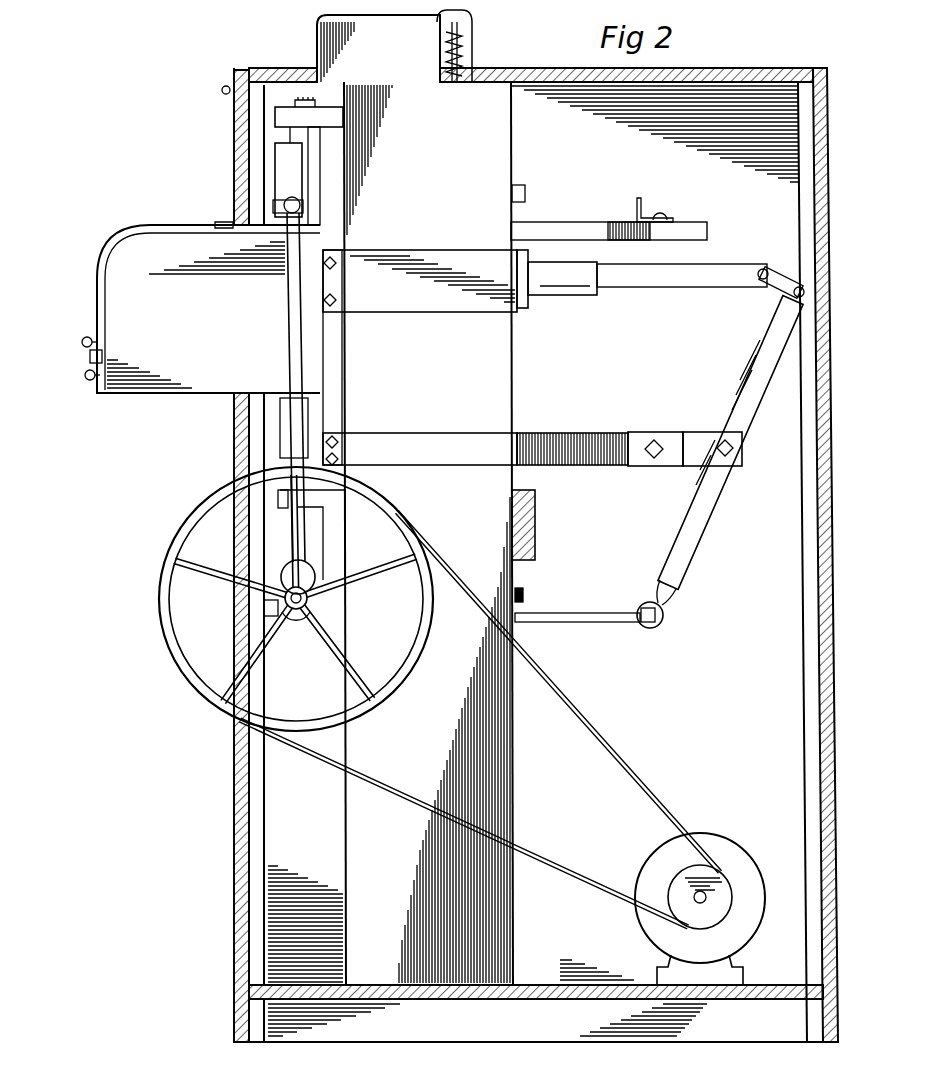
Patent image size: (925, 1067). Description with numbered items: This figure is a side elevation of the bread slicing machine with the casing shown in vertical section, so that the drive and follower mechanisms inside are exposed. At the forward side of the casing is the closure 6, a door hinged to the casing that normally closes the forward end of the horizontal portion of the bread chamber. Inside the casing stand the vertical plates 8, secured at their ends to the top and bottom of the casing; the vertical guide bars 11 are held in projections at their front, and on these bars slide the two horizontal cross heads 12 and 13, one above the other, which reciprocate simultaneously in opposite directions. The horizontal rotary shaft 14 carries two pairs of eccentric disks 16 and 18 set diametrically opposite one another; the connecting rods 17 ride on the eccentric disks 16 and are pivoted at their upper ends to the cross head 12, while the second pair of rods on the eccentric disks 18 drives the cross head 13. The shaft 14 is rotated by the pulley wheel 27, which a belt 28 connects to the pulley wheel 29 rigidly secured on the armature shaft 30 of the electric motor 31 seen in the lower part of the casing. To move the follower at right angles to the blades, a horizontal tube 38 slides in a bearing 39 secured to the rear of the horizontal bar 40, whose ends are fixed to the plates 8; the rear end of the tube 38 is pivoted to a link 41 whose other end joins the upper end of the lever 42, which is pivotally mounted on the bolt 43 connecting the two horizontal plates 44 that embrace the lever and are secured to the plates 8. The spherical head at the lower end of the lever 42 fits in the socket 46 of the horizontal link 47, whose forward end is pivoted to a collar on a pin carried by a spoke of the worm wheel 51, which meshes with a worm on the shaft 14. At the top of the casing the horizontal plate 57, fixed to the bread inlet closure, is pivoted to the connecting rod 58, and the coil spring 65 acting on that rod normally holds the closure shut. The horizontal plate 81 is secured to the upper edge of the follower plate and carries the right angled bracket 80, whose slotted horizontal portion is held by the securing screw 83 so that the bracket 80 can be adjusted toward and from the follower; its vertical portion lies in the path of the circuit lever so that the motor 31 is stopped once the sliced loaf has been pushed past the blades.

The closure 6 is at (100, 270).
The vertical plates 8 is at (530, 555).
The guide bars 11 is at (290, 135).
The cross head 12 is at (290, 172).
The cross head 13 is at (308, 413).
The rotary shaft 14 is at (276, 608).
The eccentric disks 16 is at (297, 626).
The connecting rods 17 is at (290, 306).
The eccentric disks 18 is at (278, 570).
The pulley wheel 27 is at (170, 633).
The belt 28 is at (418, 783).
The pulley wheel 29 is at (678, 887).
The armature shaft 30 is at (706, 895).
The electric motor 31 is at (738, 822).
The tube 38 is at (700, 282).
The bearing 39 is at (587, 282).
The horizontal bar 40 is at (516, 310).
The link 41 is at (781, 284).
The lever 42 is at (770, 343).
The bolt 43 is at (737, 450).
The horizontal plates 44 is at (668, 440).
The socket 46 is at (646, 622).
The horizontal link 47 is at (582, 615).
The worm wheel 51 is at (520, 592).
The horizontal plate 57 is at (445, 18).
The connecting rod 58 is at (466, 64).
The coil spring 65 is at (470, 46).
The right angled bracket 80 is at (640, 220).
The horizontal plate 81 is at (578, 234).
The securing screw 83 is at (666, 212).